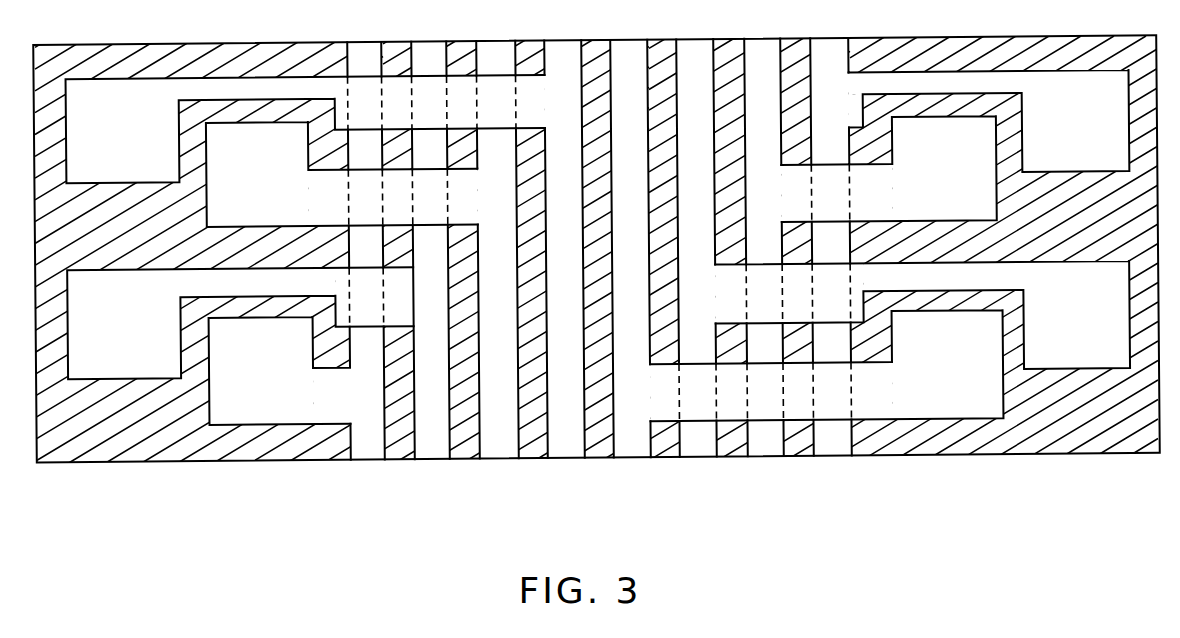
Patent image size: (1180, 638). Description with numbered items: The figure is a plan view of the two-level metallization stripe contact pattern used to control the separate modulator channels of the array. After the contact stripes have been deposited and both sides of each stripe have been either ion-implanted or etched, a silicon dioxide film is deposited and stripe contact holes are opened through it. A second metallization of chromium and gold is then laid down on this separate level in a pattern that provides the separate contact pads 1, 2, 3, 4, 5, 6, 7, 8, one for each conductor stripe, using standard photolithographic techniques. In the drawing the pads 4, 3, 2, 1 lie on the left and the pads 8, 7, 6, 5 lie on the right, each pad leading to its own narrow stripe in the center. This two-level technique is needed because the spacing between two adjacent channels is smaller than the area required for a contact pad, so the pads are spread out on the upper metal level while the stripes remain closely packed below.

The contact pad 1 is at (280, 371).
The contact pad 2 is at (240, 323).
The contact pad 3 is at (342, 174).
The contact pad 4 is at (306, 129).
The contact pad 5 is at (827, 365).
The contact pad 6 is at (922, 316).
The contact pad 7 is at (889, 169).
The contact pad 8 is at (989, 121).